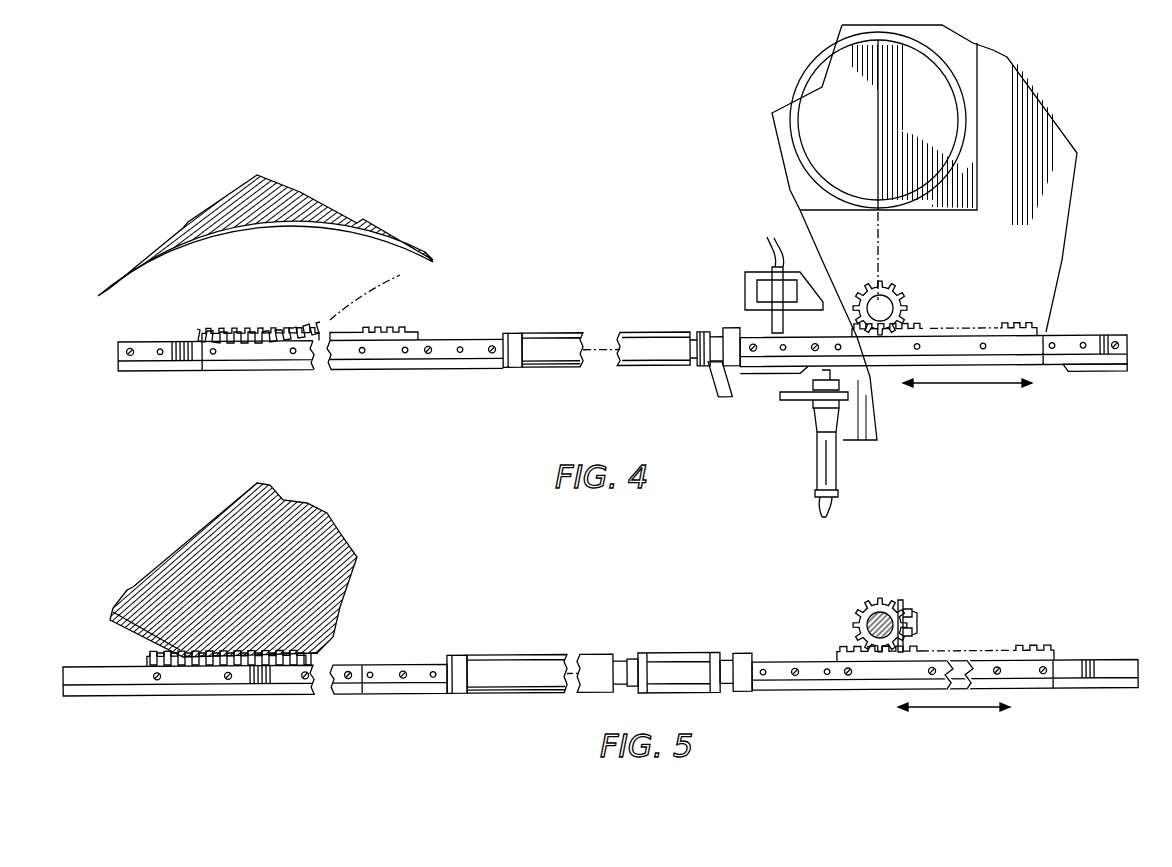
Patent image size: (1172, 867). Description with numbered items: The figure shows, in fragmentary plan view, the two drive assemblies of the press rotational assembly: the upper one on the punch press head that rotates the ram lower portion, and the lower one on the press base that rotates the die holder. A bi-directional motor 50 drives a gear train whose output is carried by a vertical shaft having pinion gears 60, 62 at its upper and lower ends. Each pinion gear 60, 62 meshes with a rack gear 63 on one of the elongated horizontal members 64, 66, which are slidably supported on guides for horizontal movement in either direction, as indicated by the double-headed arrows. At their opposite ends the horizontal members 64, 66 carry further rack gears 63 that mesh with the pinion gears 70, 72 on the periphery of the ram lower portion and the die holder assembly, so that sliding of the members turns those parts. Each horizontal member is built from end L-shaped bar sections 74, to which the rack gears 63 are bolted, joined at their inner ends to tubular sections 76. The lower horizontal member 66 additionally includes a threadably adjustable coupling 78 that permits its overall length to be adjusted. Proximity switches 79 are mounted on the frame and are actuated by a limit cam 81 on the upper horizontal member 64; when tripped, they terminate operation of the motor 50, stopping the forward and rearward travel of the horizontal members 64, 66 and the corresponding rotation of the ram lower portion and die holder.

In FIG. 4, the bi-directional motor 50 is at (832, 95).
In FIG. 4, the pinion gear 60 is at (890, 306).
In FIG. 5, the pinion gear 62 is at (915, 623).
In FIG. 4, the rack gear 63 is at (227, 345).
In FIG. 5, the rack gear 63 is at (150, 652).
In FIG. 4, the upper horizontal member 64 is at (490, 375).
In FIG. 5, the lower horizontal member 66 is at (556, 703).
In FIG. 4, the pinion gear 70 is at (148, 295).
In FIG. 5, the pinion gear 72 is at (185, 573).
In FIG. 4, the L-shaped bar section 74 is at (350, 350).
In FIG. 5, the L-shaped bar section 74 is at (130, 677).
In FIG. 4, the tubular section 76 is at (565, 345).
In FIG. 5, the tubular section 76 is at (540, 655).
In FIG. 5, the threadably adjustable coupling 78 is at (690, 655).
In FIG. 4, the proximity switch 79 is at (760, 292).
In FIG. 4, the limit cam 81 is at (772, 373).